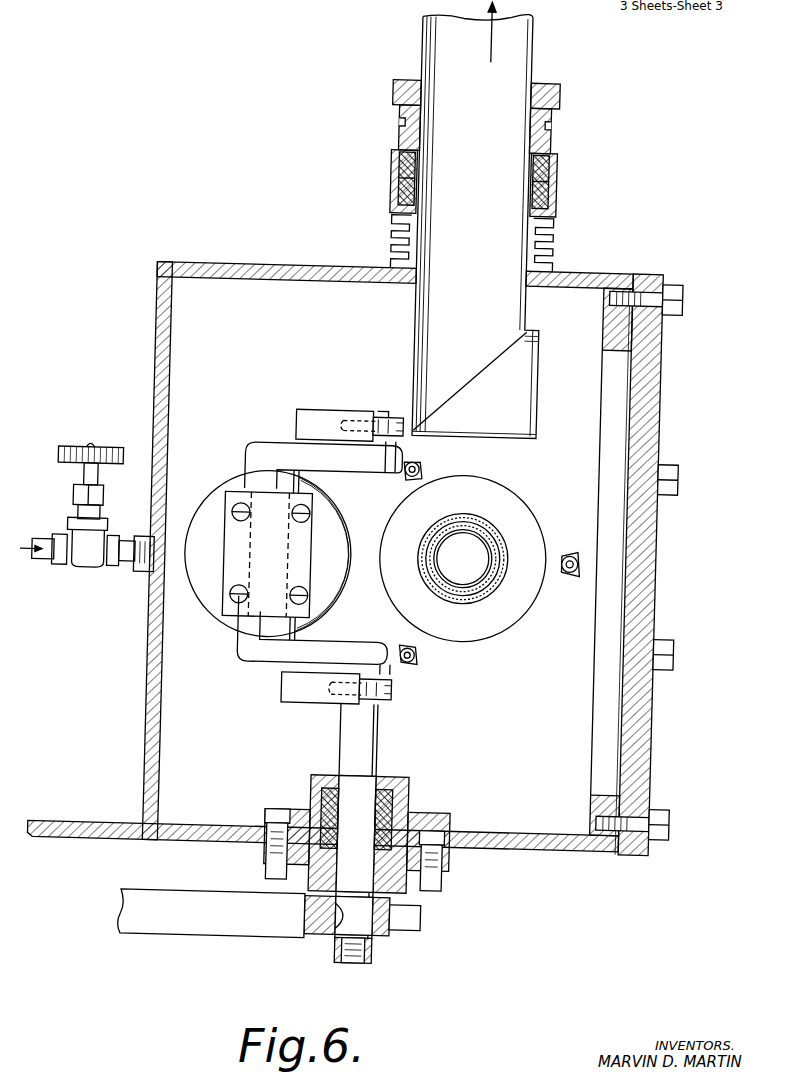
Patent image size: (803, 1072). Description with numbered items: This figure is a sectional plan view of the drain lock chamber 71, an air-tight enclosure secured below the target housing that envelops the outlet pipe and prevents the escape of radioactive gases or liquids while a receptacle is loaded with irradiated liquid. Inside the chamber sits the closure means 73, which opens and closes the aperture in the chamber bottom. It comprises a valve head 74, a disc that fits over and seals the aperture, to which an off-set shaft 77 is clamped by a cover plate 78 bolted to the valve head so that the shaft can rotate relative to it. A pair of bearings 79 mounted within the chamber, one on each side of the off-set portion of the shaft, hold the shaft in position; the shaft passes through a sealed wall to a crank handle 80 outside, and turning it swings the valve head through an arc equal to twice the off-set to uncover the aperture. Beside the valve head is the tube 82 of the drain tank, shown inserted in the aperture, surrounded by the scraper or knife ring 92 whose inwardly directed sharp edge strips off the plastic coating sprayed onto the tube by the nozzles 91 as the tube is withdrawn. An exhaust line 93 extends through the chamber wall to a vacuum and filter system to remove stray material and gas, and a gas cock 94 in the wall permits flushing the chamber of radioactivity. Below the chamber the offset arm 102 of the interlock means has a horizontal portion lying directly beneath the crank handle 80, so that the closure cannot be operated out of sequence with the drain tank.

The drain lock chamber 71 is at (268, 268).
The closure means 73 is at (300, 656).
The valve head 74 is at (226, 492).
The off-set shaft 77 is at (332, 643).
The cover plate 78 is at (312, 535).
The bearings 79 is at (328, 418).
The crank handle 80 is at (230, 897).
The tube 82 is at (428, 534).
The nozzles 91 is at (417, 464).
The scraper or knife ring 92 is at (508, 566).
The exhaust line 93 is at (505, 437).
The gas cock 94 is at (90, 575).
The offset arm 102 is at (150, 940).